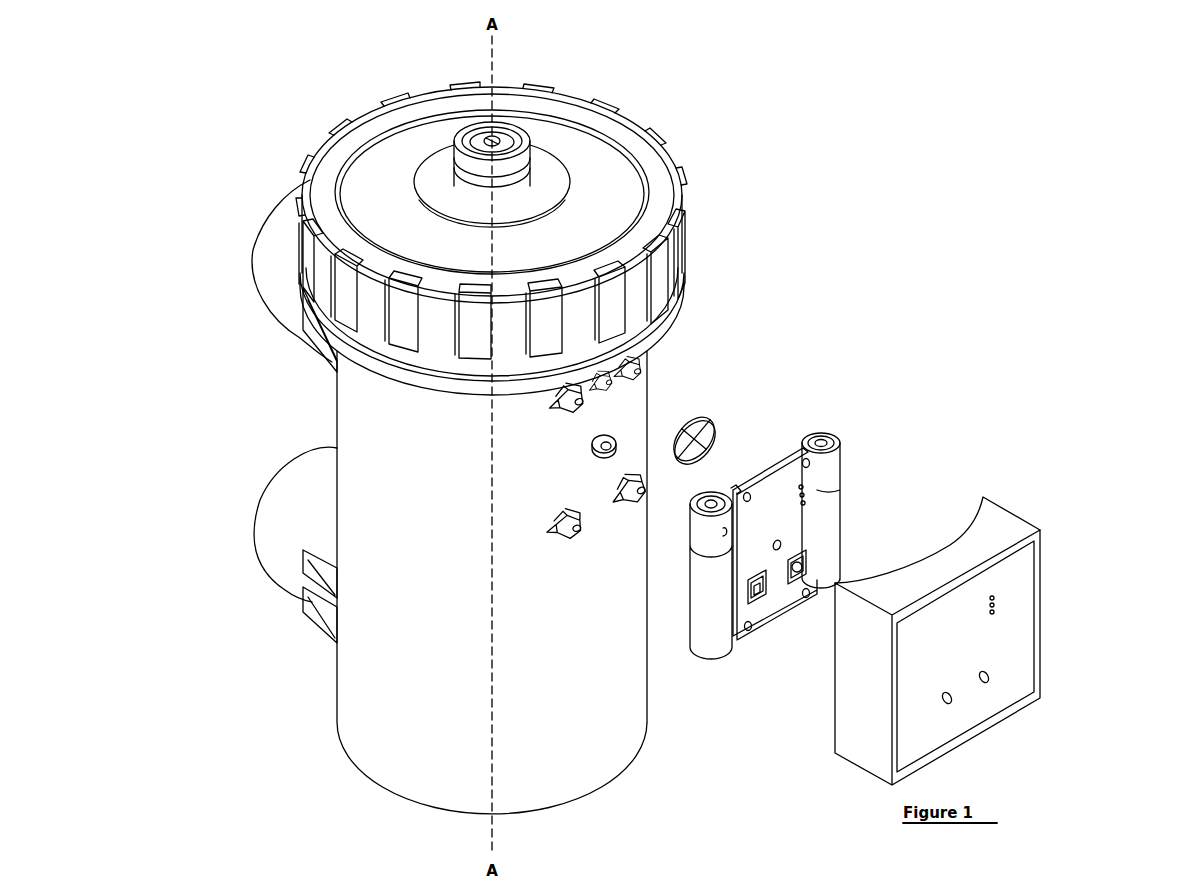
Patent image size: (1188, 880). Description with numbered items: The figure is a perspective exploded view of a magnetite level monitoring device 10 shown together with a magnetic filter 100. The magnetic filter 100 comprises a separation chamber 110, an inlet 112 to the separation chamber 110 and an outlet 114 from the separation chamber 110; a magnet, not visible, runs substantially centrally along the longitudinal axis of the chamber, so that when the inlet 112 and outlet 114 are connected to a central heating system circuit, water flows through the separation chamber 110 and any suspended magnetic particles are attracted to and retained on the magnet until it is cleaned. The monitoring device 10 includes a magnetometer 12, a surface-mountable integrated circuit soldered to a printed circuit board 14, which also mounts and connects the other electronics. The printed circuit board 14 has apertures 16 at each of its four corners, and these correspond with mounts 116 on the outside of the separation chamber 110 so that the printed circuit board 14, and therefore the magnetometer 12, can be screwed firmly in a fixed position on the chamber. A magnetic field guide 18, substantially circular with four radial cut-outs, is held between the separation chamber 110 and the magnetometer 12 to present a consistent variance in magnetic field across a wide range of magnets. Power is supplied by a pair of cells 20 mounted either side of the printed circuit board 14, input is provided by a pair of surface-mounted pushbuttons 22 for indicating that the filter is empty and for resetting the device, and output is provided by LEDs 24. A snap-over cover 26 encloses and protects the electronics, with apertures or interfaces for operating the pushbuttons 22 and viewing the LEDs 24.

The magnetic filter 100 is at (674, 83).
The magnetite level monitoring device 10 is at (891, 367).
The separation chamber 110 is at (355, 734).
The inlet 112 is at (250, 254).
The outlet 114 is at (250, 518).
The mounts 116 is at (652, 374).
The magnetic field guide 18 is at (711, 418).
The apertures 16 is at (804, 451).
The printed circuit board 14 is at (778, 612).
The magnetometer 12 is at (783, 529).
The LEDs 24 is at (814, 493).
The cells 20 is at (721, 594).
The pushbuttons 22 is at (817, 566).
The snap-over cover 26 is at (1051, 617).